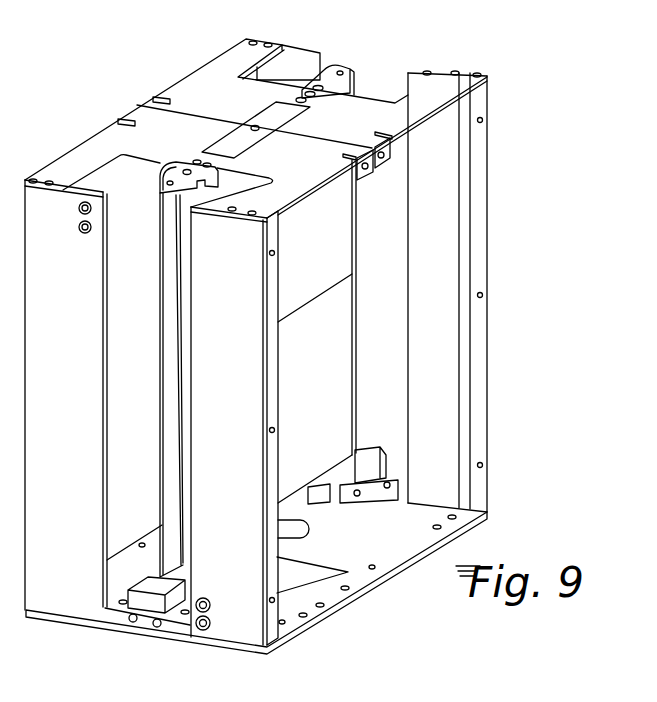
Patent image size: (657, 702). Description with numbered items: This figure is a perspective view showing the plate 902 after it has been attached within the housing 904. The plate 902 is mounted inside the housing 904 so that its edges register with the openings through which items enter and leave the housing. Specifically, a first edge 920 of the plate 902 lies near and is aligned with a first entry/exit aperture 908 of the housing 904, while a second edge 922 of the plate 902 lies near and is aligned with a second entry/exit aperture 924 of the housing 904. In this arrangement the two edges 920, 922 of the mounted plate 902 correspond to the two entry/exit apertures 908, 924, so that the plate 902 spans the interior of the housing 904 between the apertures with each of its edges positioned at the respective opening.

The plate 902 is at (342, 332).
The housing 904 is at (319, 174).
The first entry/exit aperture 908 is at (110, 463).
The first edge 920 is at (160, 338).
The second edge 922 is at (353, 345).
The second entry/exit aperture 924 is at (407, 233).